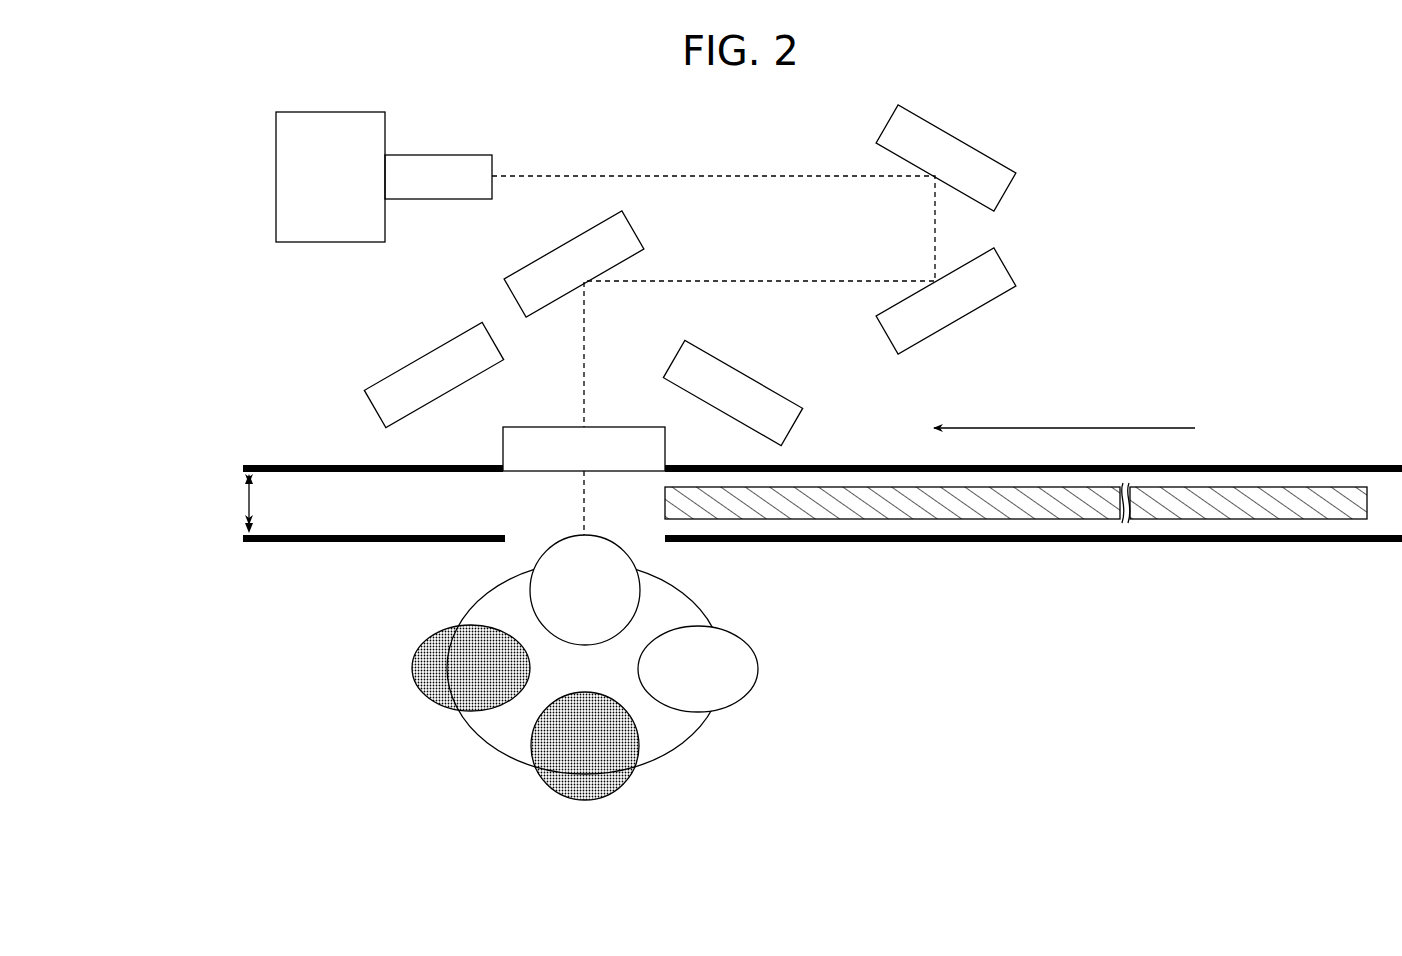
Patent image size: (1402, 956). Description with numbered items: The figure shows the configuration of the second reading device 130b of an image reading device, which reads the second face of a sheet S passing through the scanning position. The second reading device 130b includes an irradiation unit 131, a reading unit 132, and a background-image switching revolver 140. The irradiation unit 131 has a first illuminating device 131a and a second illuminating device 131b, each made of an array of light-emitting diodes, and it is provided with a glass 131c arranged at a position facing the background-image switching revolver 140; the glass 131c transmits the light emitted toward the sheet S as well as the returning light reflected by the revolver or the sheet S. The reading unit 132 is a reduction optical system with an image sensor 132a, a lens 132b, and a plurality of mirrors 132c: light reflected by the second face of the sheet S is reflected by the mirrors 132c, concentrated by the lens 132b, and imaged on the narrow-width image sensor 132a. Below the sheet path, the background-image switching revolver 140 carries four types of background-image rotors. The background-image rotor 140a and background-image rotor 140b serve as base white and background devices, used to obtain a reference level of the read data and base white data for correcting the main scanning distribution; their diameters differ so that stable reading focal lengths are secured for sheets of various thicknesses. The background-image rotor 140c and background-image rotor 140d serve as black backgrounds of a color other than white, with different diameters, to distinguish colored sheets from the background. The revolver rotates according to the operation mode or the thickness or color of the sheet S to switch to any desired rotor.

The second reading device 130b is at (1093, 73).
The reading unit 132 is at (373, 275).
The image sensor 132a is at (328, 112).
The lens 132b is at (436, 155).
The mirrors 132c is at (641, 229).
The irradiation unit 131 is at (798, 353).
The first illuminating device 131a is at (747, 370).
The second illuminating device 131b is at (424, 329).
The glass 131c is at (618, 427).
The sheet S is at (1336, 487).
The background-image switching revolver 140 is at (488, 747).
The background-image rotor 140a is at (636, 562).
The background-image rotor 140b is at (758, 668).
The background-image rotor 140c is at (584, 800).
The background-image rotor 140d is at (412, 668).